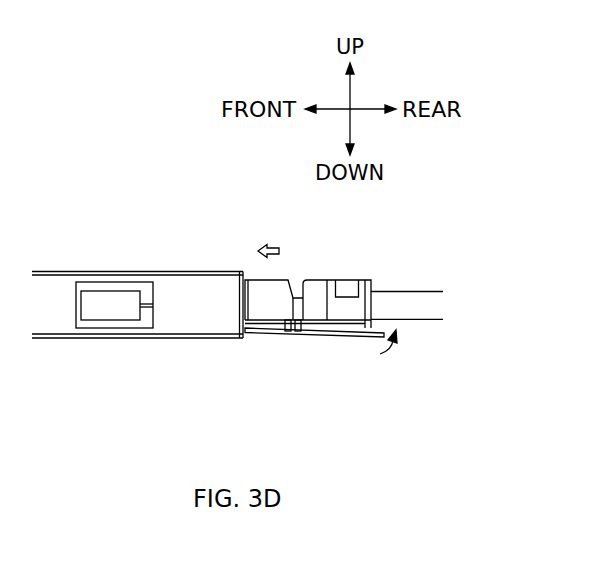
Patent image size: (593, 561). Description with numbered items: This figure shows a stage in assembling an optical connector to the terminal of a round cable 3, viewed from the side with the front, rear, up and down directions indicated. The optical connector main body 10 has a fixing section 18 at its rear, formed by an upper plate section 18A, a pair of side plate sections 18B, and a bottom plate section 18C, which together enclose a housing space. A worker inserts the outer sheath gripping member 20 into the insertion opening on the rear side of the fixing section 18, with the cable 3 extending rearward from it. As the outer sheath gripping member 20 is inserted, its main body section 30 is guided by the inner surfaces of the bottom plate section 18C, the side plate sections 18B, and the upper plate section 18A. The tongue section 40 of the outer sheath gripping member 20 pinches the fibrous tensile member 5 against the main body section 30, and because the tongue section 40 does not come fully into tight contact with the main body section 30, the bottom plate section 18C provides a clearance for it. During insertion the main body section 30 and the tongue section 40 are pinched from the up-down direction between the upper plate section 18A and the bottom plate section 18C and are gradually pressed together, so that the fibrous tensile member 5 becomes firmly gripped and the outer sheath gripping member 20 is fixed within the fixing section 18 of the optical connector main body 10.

The optical connector main body 10 is at (63, 267).
The fixing section 18 is at (127, 267).
The upper plate section 18A is at (198, 270).
The side plate sections 18B is at (195, 312).
The bottom plate section 18C is at (196, 340).
The outer sheath gripping member 20 is at (316, 280).
The main body section 30 is at (323, 280).
The round cable 3 is at (420, 294).
The tongue section 40 is at (328, 338).
The fibrous tensile member 5 is at (373, 336).